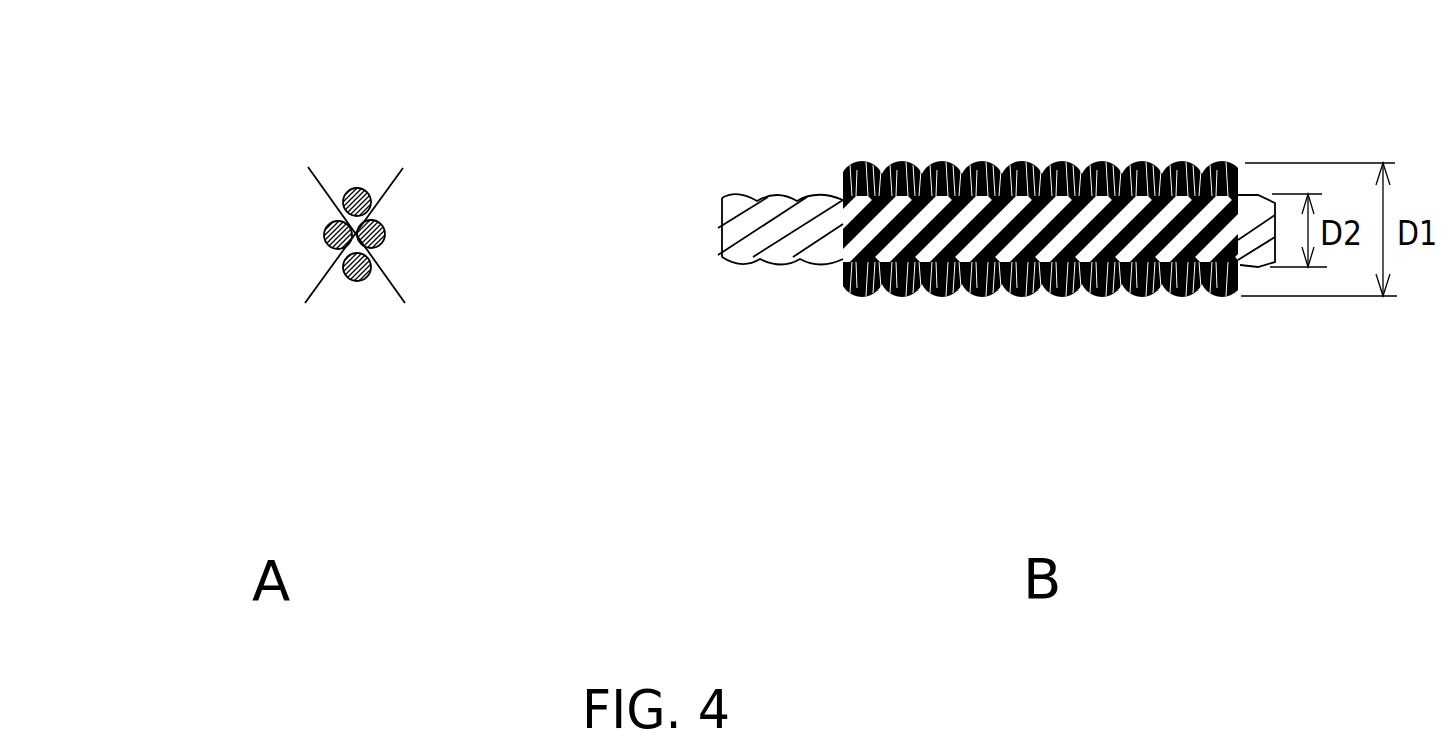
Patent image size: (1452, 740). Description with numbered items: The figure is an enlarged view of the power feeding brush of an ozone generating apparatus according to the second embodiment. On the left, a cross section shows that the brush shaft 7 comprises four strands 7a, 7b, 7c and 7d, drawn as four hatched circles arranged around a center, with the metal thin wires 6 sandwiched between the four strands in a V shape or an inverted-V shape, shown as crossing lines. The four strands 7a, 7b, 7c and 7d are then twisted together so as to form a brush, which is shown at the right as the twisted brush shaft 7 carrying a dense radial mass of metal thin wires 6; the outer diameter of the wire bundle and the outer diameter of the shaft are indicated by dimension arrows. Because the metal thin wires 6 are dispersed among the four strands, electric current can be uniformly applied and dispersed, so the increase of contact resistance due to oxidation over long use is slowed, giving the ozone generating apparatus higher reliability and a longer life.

The strand 7a is at (363, 188).
The strand 7b is at (386, 237).
The strand 7c is at (347, 290).
The strand 7d is at (325, 232).
The metal thin wire 6 is at (305, 303).
The brush shaft 7 is at (775, 258).